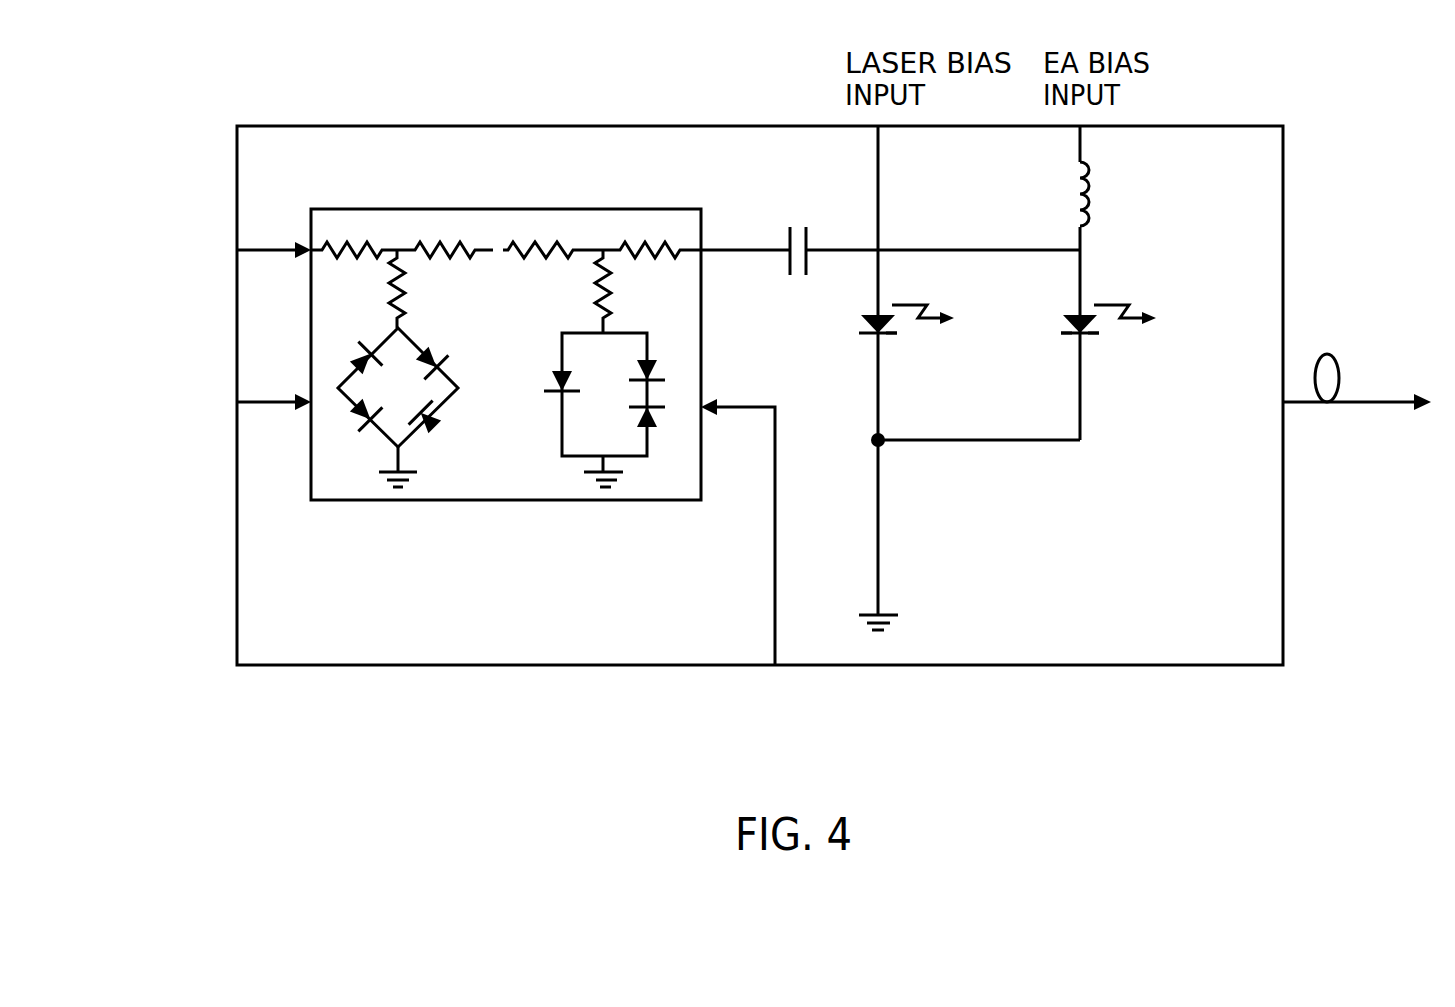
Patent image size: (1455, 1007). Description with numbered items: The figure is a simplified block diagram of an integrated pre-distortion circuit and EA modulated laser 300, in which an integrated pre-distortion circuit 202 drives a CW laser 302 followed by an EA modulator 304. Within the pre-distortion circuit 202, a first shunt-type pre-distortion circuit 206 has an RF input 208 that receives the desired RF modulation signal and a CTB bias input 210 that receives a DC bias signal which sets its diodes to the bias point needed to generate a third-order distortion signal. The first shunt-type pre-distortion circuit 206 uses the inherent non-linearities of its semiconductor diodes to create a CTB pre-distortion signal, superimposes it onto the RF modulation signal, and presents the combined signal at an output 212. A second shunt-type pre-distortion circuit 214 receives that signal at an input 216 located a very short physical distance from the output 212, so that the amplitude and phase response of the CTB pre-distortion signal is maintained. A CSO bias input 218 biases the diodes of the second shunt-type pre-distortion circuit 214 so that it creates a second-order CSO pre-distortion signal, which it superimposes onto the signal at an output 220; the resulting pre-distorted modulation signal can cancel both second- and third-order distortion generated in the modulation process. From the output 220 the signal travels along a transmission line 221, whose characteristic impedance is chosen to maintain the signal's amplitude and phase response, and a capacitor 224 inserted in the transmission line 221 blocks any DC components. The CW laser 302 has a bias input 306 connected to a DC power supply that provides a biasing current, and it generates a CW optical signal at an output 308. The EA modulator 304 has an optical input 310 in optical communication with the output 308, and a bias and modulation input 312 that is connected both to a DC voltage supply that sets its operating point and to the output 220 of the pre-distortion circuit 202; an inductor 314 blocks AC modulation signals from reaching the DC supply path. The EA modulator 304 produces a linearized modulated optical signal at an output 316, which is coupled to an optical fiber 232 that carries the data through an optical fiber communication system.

The integrated pre-distortion circuit and EA modulated laser 300 is at (553, 125).
The integrated pre-distortion circuit 202 is at (673, 208).
The RF input 208 is at (298, 247).
The CTB bias input 210 is at (300, 405).
The first shunt-type pre-distortion circuit 206 is at (357, 345).
The output 212 is at (491, 253).
The input 216 is at (508, 253).
The second shunt-type pre-distortion circuit 214 is at (562, 390).
The CSO bias input 218 is at (704, 404).
The output 220 is at (705, 252).
The capacitor 224 is at (795, 223).
The transmission line 221 is at (840, 247).
The CW laser 302 is at (865, 336).
The bias input 306 is at (888, 307).
The output 308 is at (903, 335).
The EA modulator 304 is at (1068, 336).
The optical input 310 is at (1050, 322).
The bias and modulation input 312 is at (1091, 307).
The output 316 is at (1105, 335).
The inductor 314 is at (1093, 186).
The optical fiber 232 is at (1383, 400).